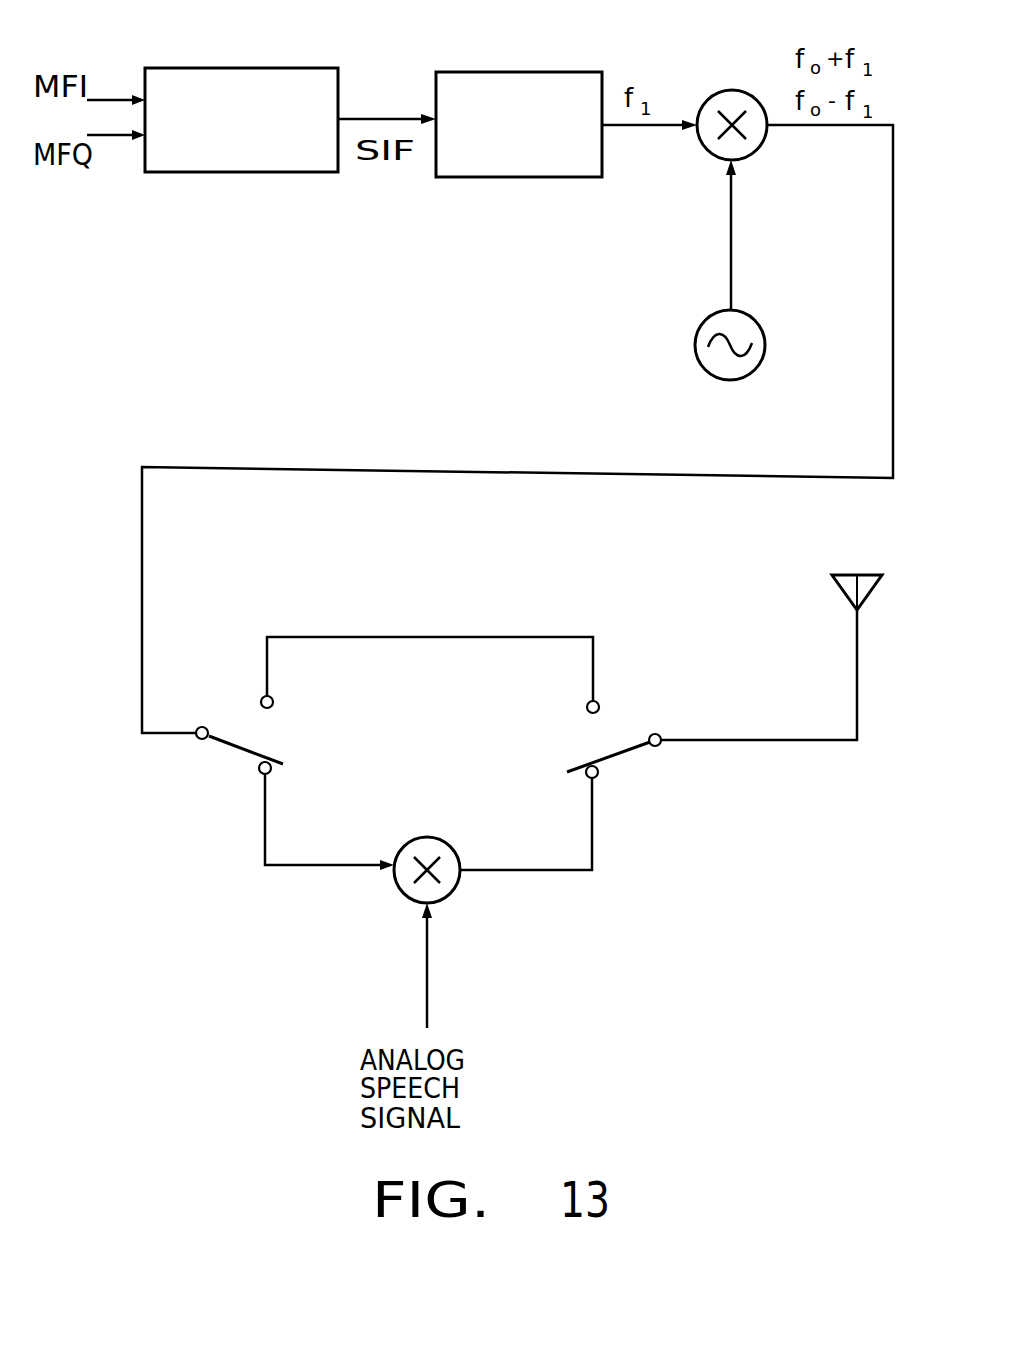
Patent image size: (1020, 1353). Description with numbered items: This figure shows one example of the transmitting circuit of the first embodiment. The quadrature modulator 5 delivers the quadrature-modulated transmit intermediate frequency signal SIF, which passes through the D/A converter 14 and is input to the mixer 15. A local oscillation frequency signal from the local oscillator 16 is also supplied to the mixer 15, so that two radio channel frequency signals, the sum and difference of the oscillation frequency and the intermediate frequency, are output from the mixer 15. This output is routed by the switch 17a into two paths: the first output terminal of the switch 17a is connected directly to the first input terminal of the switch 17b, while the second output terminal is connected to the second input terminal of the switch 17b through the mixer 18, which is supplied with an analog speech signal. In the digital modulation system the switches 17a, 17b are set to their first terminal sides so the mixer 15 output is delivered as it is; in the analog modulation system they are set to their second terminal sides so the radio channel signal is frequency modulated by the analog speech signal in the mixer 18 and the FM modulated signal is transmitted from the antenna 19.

The quadrature modulator 5 is at (302, 68).
The D/A converter 14 is at (545, 72).
The mixer 15 is at (730, 88).
The local oscillator 16 is at (765, 358).
The switch 17a is at (268, 750).
The switch 17b is at (588, 752).
The mixer 18 is at (452, 848).
The antenna 19 is at (838, 592).